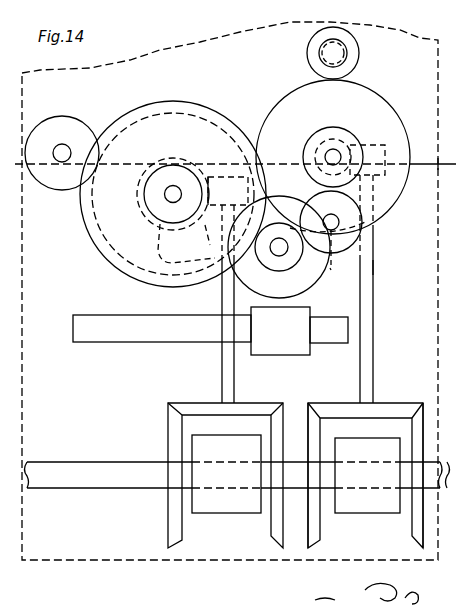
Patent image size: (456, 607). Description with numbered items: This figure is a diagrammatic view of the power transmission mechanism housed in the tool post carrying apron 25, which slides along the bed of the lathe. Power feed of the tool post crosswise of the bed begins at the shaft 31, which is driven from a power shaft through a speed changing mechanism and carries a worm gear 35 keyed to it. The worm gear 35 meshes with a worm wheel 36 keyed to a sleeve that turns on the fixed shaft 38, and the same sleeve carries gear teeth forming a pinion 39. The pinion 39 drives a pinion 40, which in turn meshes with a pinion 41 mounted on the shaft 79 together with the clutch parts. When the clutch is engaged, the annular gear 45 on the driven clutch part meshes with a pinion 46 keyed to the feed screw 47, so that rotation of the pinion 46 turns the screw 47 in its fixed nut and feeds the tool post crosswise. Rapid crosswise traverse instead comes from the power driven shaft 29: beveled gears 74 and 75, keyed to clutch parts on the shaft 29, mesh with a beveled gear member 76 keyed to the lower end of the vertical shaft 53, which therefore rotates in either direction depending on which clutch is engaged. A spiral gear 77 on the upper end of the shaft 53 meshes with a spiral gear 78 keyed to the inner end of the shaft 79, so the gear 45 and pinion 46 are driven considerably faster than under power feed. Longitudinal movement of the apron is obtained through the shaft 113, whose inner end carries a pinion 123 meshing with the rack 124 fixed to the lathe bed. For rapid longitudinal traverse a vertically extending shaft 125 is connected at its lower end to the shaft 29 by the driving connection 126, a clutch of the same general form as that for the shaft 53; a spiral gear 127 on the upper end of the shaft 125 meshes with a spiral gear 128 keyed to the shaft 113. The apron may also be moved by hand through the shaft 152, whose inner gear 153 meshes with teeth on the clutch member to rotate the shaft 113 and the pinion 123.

The tool post carrying apron 25 is at (202, 42).
The power driven shaft 29 is at (107, 472).
The shaft 31 is at (328, 326).
The worm gear 35 is at (286, 348).
The worm wheel 36 is at (331, 270).
The fixed shaft 38 is at (279, 248).
The pinion 39 is at (279, 247).
The pinion 40 is at (358, 248).
The pinion 41 is at (330, 127).
The annular gear 45 is at (388, 104).
The pinion 46 is at (357, 62).
The feed screw 47 is at (320, 51).
The vertical shaft 53 is at (369, 271).
The beveled gear 74 is at (312, 422).
The beveled gear 75 is at (422, 422).
The beveled gear member 76 is at (340, 408).
The spiral gear 77 is at (368, 145).
The spiral gear 78 is at (339, 142).
The shaft 79 is at (330, 156).
The shaft 113 is at (165, 193).
The pinion 123 is at (147, 183).
The rack 124 is at (130, 165).
The vertically extending shaft 125 is at (222, 304).
The driving connection 126 is at (184, 394).
The spiral gear 127 is at (186, 243).
The spiral gear 128 is at (188, 245).
The shaft 152 is at (62, 160).
The gear 153 is at (63, 116).